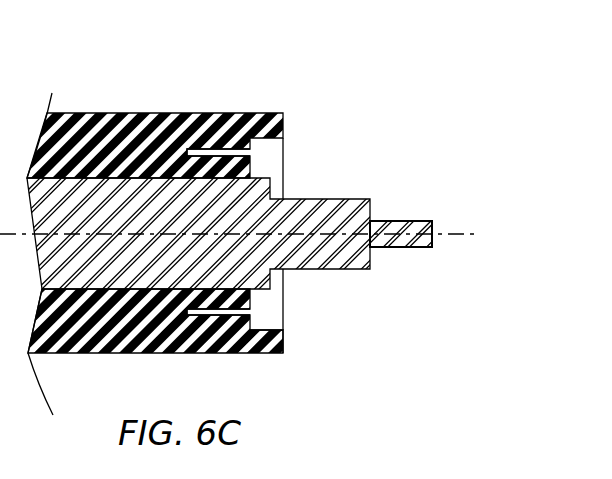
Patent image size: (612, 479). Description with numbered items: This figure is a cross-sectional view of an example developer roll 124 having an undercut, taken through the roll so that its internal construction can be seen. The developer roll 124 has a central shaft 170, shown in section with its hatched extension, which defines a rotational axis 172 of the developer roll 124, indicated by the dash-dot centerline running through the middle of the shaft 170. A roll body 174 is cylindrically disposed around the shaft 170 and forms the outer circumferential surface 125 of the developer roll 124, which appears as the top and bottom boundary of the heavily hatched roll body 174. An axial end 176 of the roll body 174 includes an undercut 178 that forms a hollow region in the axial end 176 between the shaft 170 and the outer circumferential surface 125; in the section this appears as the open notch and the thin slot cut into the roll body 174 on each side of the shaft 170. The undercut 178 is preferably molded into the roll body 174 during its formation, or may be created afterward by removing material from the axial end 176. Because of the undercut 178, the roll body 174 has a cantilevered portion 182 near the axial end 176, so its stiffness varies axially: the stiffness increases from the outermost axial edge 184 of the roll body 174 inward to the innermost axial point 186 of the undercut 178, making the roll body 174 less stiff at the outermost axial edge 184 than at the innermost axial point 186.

The developer roll 124 is at (203, 214).
The outer circumferential surface 125 is at (200, 113).
The roll body 174 is at (88, 128).
The axial end 176 is at (339, 153).
The undercut 178 is at (282, 154).
The shaft 170 is at (350, 199).
The rotational axis 172 is at (443, 221).
The innermost axial point 186 is at (250, 303).
The outermost axial edge 184 is at (283, 338).
The cantilevered portion 182 is at (273, 347).